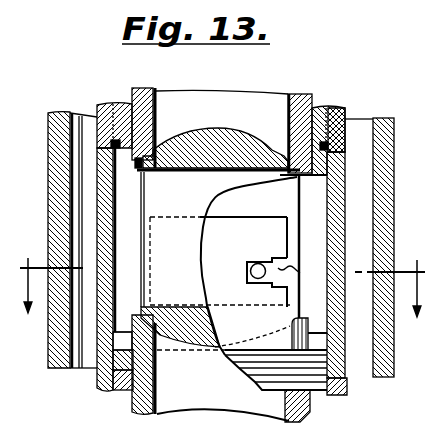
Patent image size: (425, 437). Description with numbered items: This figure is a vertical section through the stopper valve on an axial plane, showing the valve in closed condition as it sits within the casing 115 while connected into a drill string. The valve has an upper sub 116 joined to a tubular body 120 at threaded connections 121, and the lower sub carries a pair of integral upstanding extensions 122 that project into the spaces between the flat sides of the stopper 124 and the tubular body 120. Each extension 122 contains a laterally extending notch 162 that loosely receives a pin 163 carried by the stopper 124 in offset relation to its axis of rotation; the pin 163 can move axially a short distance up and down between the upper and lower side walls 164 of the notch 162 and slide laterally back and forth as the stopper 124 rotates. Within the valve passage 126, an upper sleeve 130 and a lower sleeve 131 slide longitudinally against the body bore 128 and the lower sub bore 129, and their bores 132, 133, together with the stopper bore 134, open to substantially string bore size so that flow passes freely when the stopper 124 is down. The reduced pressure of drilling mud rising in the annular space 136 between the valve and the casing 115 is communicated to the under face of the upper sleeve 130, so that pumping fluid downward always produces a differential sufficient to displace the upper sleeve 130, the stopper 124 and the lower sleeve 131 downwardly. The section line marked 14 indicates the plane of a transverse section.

The section line 14- 14 is at (221, 277).
The casing 115 is at (48, 198).
The upper sub 116 is at (97, 107).
The tubular body 120 is at (330, 208).
The threaded connections 121 is at (346, 110).
The upstanding extensions 122 is at (234, 297).
The stopper 124 is at (176, 172).
The valve passage 126 is at (222, 102).
The body bore 128 is at (288, 127).
The lower sub bore 129 is at (157, 396).
The upper sleeve 130 is at (288, 108).
The lower sleeve 131 is at (157, 362).
The upper sleeve bore 132 is at (157, 124).
The lower sleeve bore 133 is at (157, 381).
The stopper bore 134 is at (150, 300).
The annular space 136 is at (385, 199).
The notch 162 is at (302, 273).
The pin 163 is at (250, 271).
The side walls 164 is at (277, 258).